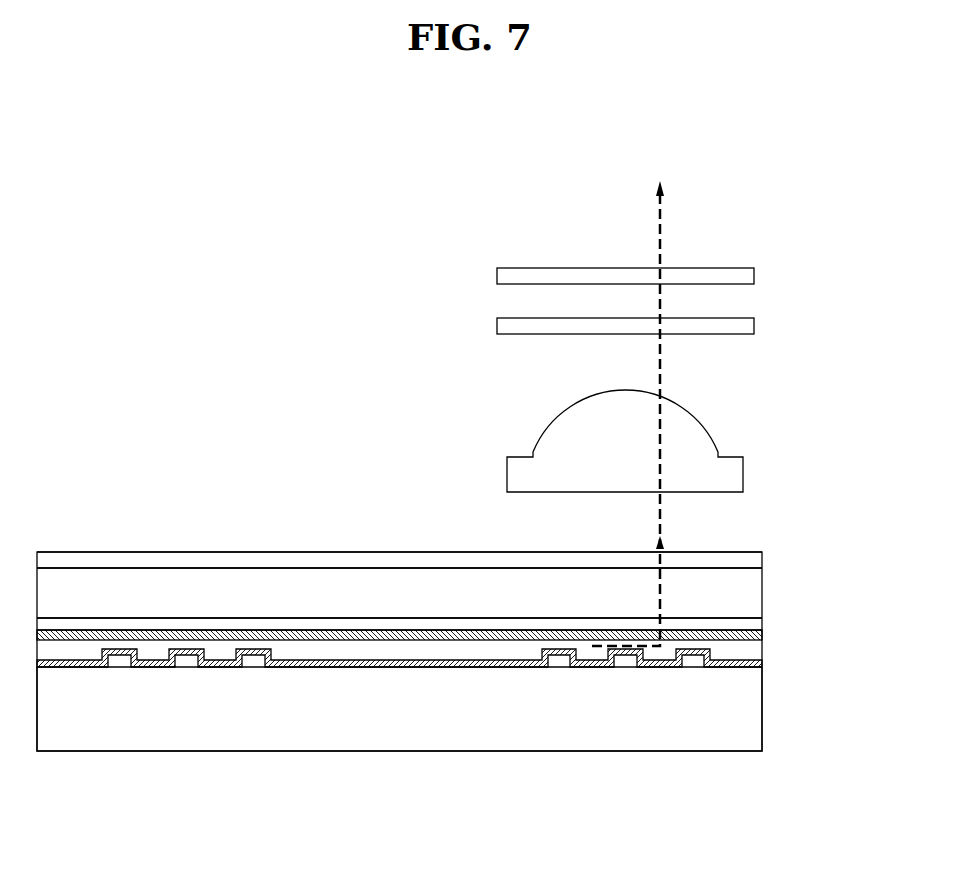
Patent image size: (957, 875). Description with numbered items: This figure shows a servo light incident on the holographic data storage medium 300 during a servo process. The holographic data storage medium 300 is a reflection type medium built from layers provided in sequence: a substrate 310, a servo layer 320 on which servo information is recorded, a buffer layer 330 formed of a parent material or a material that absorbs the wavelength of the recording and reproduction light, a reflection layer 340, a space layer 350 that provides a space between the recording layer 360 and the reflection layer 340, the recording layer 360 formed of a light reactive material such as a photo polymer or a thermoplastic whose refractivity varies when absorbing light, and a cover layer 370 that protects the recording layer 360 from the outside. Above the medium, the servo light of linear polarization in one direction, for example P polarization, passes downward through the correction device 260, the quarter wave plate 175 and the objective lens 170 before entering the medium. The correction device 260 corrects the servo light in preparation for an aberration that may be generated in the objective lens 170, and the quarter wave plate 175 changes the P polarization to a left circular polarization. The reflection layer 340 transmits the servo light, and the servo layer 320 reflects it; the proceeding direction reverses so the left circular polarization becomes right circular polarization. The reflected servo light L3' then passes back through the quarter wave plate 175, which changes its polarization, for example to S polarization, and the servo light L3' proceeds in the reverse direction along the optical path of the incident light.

The holographic data storage medium 300 is at (836, 530).
The substrate 310 is at (755, 717).
The servo layer 320 is at (757, 668).
The buffer layer 330 is at (755, 650).
The reflection layer 340 is at (757, 637).
The space layer 350 is at (755, 622).
The recording layer 360 is at (750, 590).
The cover layer 370 is at (755, 563).
The objective lens 170 is at (743, 473).
The quarter wave plate 175 is at (754, 326).
The correction device 260 is at (667, 407).
The reflected servo light L3' is at (664, 407).